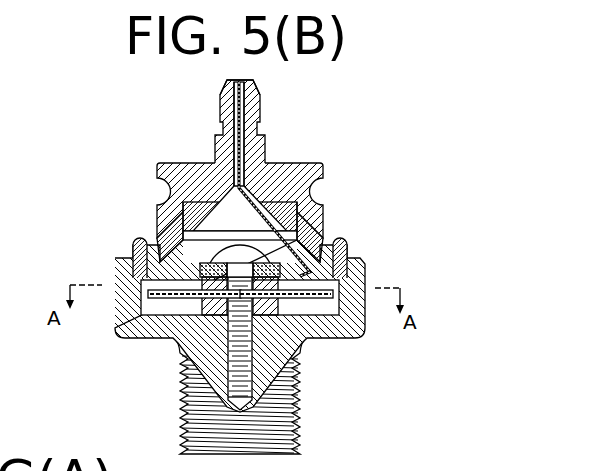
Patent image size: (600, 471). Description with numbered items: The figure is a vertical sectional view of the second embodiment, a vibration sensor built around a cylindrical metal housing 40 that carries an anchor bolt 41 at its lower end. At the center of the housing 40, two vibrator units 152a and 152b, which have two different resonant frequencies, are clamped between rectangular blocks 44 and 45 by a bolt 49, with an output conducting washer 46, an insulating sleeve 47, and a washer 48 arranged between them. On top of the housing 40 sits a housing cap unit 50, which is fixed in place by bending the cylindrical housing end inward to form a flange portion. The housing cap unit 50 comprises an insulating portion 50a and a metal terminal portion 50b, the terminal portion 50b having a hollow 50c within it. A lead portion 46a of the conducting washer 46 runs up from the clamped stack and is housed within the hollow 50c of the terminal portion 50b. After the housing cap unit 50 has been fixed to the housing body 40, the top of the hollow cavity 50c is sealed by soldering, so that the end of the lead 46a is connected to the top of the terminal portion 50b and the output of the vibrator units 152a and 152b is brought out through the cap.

The cylindrical metal housing 40 is at (332, 333).
The anchor bolt 41 is at (300, 408).
The rectangular block 44 is at (200, 307).
The rectangular block 45 is at (137, 244).
The output conducting washer 46 is at (340, 266).
The lead portion 46a is at (308, 203).
The insulating sleeve 47 is at (157, 236).
The washer 48 is at (323, 238).
The bolt 49 is at (228, 353).
The housing cap unit 50 is at (255, 154).
The insulating portion 50a is at (297, 168).
The metal terminal portion 50b is at (257, 177).
The hollow 50c is at (227, 108).
The vibrator unit 152a is at (162, 304).
The vibrator unit 152b is at (334, 286).